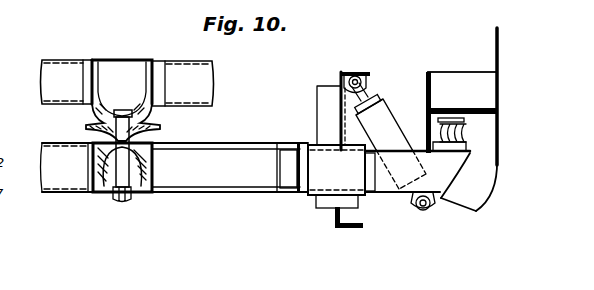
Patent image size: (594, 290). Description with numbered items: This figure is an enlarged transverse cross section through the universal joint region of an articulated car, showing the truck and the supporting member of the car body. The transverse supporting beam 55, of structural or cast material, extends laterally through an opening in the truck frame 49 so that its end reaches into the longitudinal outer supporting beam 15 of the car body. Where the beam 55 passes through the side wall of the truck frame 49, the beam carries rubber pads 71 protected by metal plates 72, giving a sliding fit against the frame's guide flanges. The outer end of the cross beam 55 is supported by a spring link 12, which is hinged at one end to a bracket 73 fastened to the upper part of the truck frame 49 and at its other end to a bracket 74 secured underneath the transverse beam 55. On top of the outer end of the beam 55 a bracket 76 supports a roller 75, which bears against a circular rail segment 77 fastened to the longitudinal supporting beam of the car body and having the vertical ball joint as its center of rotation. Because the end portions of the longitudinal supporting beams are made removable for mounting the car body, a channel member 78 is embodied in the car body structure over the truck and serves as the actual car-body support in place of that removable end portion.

The spring suspension member 12 is at (393, 123).
The supporting beam 15 is at (492, 167).
The truck frame 49 is at (339, 80).
The transverse supporting beam 55 is at (264, 181).
The rubber pad 71 is at (373, 178).
The metal plate 72 is at (318, 176).
The bracket 73 is at (370, 73).
The bracket 74 is at (431, 206).
The roller 75 is at (467, 132).
The bracket 76 is at (467, 141).
The circular rail segment 77 is at (464, 121).
The channel member 78 is at (490, 70).